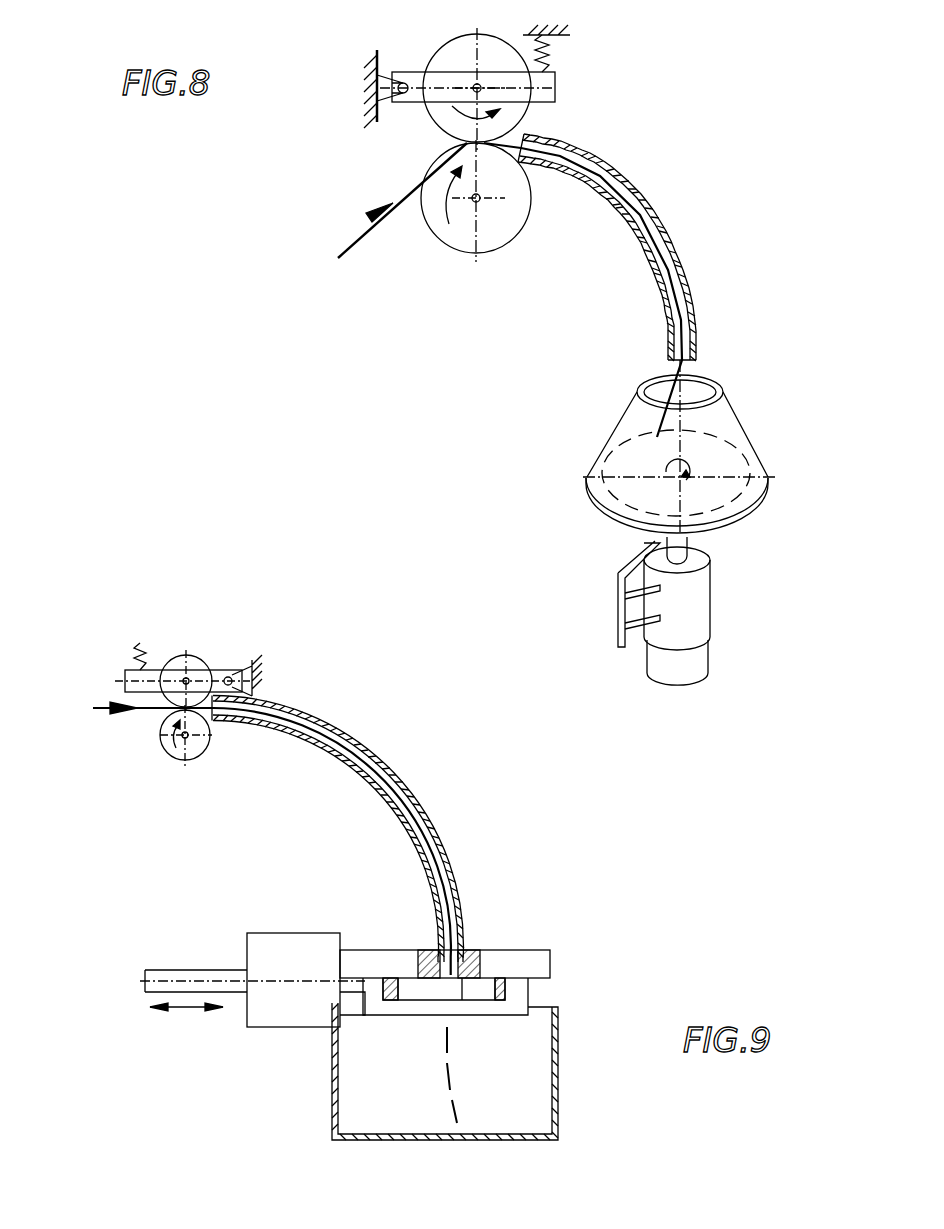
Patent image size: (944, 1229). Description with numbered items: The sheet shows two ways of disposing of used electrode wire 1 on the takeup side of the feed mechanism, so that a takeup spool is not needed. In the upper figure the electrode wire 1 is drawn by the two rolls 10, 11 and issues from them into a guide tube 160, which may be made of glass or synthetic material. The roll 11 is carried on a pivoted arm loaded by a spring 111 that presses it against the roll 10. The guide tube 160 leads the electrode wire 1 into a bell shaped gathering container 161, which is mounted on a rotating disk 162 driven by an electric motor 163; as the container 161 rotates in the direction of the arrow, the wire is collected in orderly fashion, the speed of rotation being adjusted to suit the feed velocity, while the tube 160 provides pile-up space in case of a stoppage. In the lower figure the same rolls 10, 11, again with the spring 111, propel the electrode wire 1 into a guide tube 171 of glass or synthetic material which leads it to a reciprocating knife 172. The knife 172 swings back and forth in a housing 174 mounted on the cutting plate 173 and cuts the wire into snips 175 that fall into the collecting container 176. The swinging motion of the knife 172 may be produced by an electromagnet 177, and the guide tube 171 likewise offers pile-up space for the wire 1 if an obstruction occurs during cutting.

In FIG. 8, the electrode wire 1 is at (343, 248).
In FIG. 9, the electrode wire 1 is at (95, 710).
In FIG. 8, the roll 10 is at (462, 243).
In FIG. 9, the roll 10 is at (198, 750).
In FIG. 8, the roll 11 is at (453, 53).
In FIG. 9, the roll 11 is at (198, 665).
In FIG. 8, the spring 111 is at (553, 57).
In FIG. 9, the spring 111 is at (138, 648).
In FIG. 8, the guide tube 160 is at (657, 227).
In FIG. 8, the gathering container 161 is at (727, 417).
In FIG. 8, the rotating disk 162 is at (755, 503).
In FIG. 8, the electric motor 163 is at (705, 653).
In FIG. 9, the guide tube 171 is at (340, 730).
In FIG. 9, the reciprocating knife 172 is at (480, 990).
In FIG. 9, the cutting plate 173 is at (503, 957).
In FIG. 9, the housing 174 is at (520, 997).
In FIG. 9, the snips 175 is at (450, 1045).
In FIG. 9, the collecting container 176 is at (558, 1100).
In FIG. 9, the electromagnet 177 is at (272, 1022).